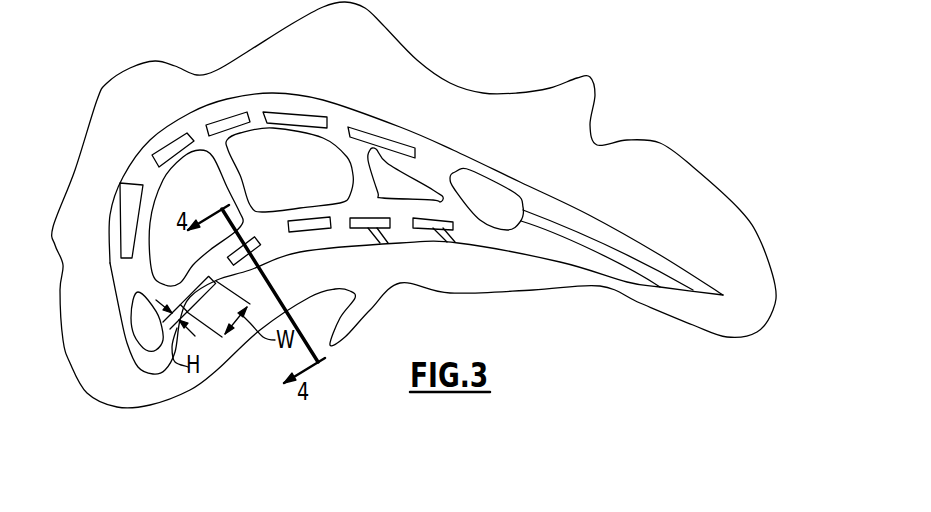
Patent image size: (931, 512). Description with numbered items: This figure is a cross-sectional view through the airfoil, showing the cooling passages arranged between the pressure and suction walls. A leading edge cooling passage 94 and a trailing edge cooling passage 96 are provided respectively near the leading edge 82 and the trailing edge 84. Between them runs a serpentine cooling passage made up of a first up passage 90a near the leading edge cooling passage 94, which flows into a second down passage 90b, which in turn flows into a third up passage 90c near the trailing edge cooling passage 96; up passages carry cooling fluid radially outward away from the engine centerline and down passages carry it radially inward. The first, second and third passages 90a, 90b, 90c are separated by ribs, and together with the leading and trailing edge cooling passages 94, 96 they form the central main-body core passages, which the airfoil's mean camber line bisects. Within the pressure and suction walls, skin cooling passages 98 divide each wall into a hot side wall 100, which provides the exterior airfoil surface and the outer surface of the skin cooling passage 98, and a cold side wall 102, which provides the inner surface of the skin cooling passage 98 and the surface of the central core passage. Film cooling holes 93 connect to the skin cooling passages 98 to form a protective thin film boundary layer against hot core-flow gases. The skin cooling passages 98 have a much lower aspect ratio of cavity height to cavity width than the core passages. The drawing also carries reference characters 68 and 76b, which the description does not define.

The airfoil component 68 is at (672, 112).
The second wall portion 76b is at (548, 103).
The leading edge 82 is at (137, 373).
The trailing edge 84 is at (727, 297).
The first passage 90a is at (216, 205).
The second passage 90b is at (299, 173).
The third passage 90c is at (424, 195).
The film cooling holes 93 is at (453, 240).
The leading edge cooling passage 94 is at (145, 322).
The trailing edge cooling passage 96 is at (485, 192).
The skin cooling passage 98 is at (197, 287).
The hot side wall 100 is at (307, 237).
The cold side wall 102 is at (290, 213).